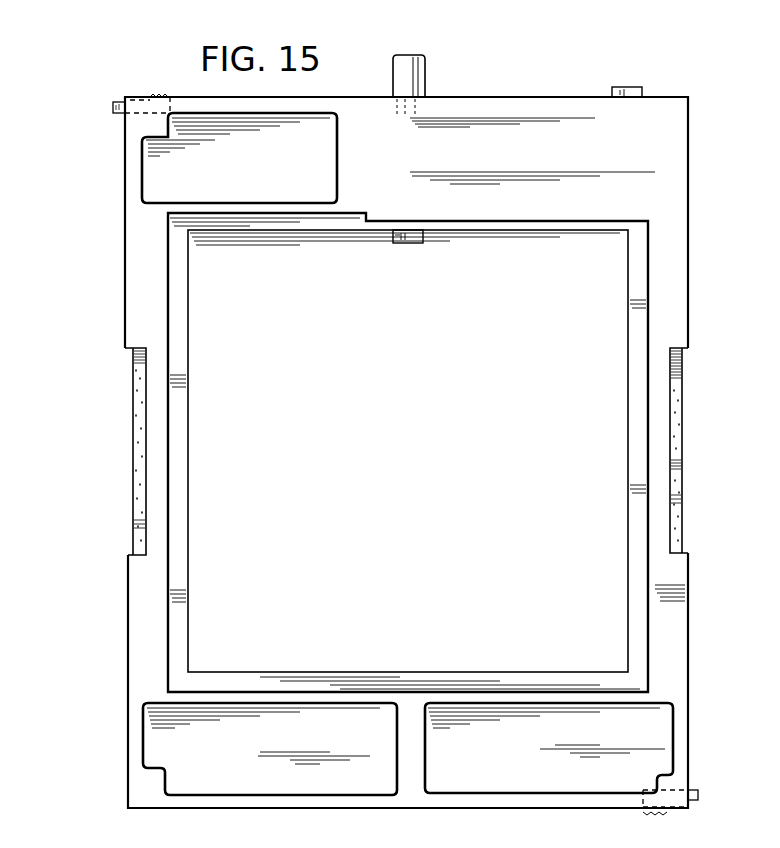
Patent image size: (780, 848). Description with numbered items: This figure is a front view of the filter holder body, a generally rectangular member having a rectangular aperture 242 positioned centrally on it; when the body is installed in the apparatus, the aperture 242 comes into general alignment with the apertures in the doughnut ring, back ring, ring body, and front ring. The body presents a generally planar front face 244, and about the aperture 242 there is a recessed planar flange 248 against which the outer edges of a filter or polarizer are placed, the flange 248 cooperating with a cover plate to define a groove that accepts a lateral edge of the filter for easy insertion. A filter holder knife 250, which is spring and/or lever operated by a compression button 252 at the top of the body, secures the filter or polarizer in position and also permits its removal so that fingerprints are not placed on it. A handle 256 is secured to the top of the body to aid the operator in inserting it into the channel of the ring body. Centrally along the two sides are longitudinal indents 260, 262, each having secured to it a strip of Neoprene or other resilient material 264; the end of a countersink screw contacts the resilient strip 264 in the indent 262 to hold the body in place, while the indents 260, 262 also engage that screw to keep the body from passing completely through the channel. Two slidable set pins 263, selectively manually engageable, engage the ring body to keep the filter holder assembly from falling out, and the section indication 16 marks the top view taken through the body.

The rectangular aperture 242 is at (630, 315).
The front face 244 is at (667, 228).
The recessed planar flange 248 is at (660, 537).
The filter holder knife 250 is at (408, 243).
The compression button 252 is at (642, 90).
The handle 256 is at (427, 78).
The longitudinal indent 260 is at (132, 352).
The longitudinal indent 262 is at (685, 350).
The slidable set pin 263 is at (150, 92).
The resilient strip 264 is at (133, 522).
The section line 16- 16 is at (118, 449).